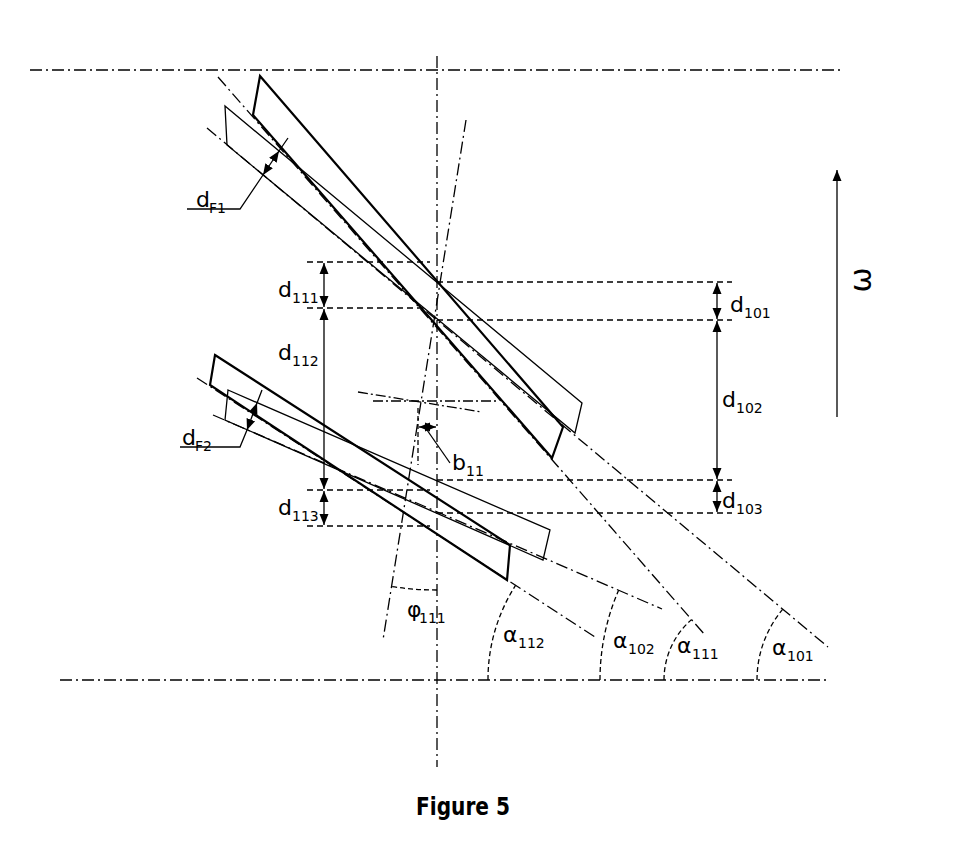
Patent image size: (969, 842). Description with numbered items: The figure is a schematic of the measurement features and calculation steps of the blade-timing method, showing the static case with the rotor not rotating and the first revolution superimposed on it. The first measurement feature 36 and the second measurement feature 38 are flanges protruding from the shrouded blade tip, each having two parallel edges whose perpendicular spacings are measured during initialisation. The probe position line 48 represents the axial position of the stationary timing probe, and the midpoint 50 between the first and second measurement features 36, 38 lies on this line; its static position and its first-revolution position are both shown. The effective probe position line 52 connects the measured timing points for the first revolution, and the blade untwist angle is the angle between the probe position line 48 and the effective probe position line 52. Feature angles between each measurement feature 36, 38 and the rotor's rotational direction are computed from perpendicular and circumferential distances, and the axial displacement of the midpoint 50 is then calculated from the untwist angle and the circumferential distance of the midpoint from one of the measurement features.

The first measurement feature 36 is at (268, 231).
The second measurement feature 38 is at (248, 479).
The probe position line 48 is at (437, 56).
The midpoint 50 is at (478, 428).
The effective probe position line 52 is at (462, 148).